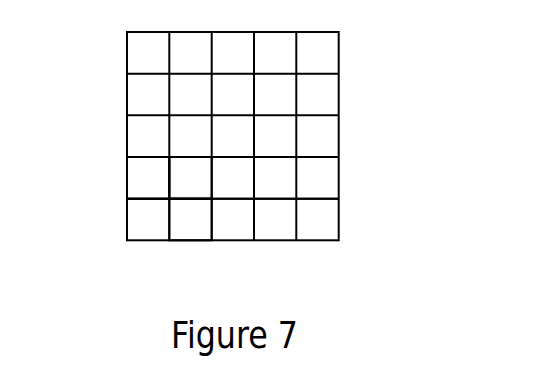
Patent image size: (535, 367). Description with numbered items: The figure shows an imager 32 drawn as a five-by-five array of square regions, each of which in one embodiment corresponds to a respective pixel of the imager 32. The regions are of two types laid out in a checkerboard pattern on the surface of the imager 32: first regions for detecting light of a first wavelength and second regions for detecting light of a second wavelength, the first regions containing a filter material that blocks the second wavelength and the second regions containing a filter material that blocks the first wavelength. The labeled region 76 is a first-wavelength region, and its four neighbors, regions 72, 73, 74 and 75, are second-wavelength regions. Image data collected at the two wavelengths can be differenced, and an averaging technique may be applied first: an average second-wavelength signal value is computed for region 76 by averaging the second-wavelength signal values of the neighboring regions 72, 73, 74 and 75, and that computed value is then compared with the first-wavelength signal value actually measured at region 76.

The imager 32 is at (72, 55).
The region 72 is at (180, 152).
The region 73 is at (133, 182).
The region 74 is at (240, 171).
The region 75 is at (184, 235).
The region 76 is at (183, 190).